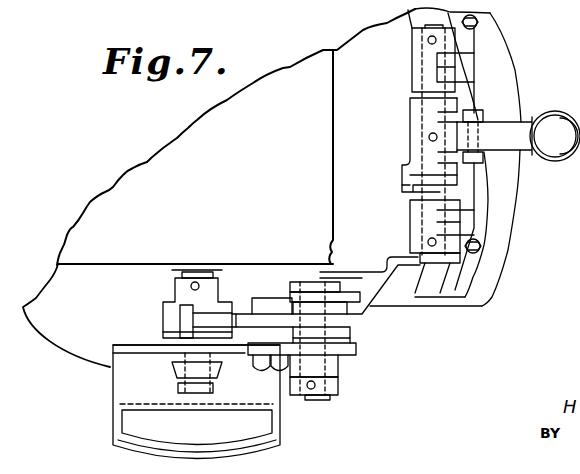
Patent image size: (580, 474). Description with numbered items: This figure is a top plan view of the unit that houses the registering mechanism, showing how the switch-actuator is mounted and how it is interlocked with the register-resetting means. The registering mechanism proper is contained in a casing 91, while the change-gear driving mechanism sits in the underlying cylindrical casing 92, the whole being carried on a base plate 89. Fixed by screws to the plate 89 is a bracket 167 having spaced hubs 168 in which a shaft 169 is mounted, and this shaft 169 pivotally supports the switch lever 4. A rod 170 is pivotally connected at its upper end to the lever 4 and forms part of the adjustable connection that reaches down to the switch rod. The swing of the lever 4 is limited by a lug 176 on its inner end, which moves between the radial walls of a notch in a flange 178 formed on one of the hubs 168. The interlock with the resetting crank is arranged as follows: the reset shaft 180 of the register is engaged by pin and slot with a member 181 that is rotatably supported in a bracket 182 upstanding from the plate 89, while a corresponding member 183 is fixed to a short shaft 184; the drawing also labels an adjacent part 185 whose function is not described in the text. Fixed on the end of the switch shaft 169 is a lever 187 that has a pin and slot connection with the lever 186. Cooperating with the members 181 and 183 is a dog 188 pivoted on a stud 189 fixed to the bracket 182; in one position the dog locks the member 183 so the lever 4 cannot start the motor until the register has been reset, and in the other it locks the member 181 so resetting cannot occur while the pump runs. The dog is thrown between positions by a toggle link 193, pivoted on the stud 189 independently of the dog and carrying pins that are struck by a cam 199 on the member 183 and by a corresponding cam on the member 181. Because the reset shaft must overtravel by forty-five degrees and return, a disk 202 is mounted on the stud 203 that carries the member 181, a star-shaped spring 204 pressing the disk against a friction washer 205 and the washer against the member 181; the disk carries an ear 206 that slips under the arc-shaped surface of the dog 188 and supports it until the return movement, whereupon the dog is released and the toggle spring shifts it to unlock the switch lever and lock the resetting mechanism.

The switch lever 4 is at (518, 136).
The base plate 89 is at (498, 224).
The register casing 91 is at (236, 137).
The cylindrical casing 92 is at (55, 281).
The bracket 167 is at (485, 74).
The hubs 168 is at (418, 62).
The shaft 169 is at (458, 72).
The rod 170 is at (485, 118).
The lug 176 is at (410, 172).
The flange 178 is at (405, 190).
The reset shaft 180 is at (178, 272).
The member 181 is at (180, 306).
The bracket 182 is at (117, 352).
The member 183 is at (346, 320).
The short shaft 184 is at (318, 396).
The bottom block 185 is at (340, 386).
The lever 186 is at (290, 300).
The lever 187 is at (383, 270).
The dog 188 is at (238, 312).
The stud 189 is at (252, 298).
The toggle link 193 is at (250, 358).
The cam 199 is at (315, 355).
The disk 202 is at (182, 335).
The stud 203 is at (188, 372).
The star-shaped spring 204 is at (186, 352).
The friction washer 205 is at (170, 328).
The ear 206 is at (185, 318).